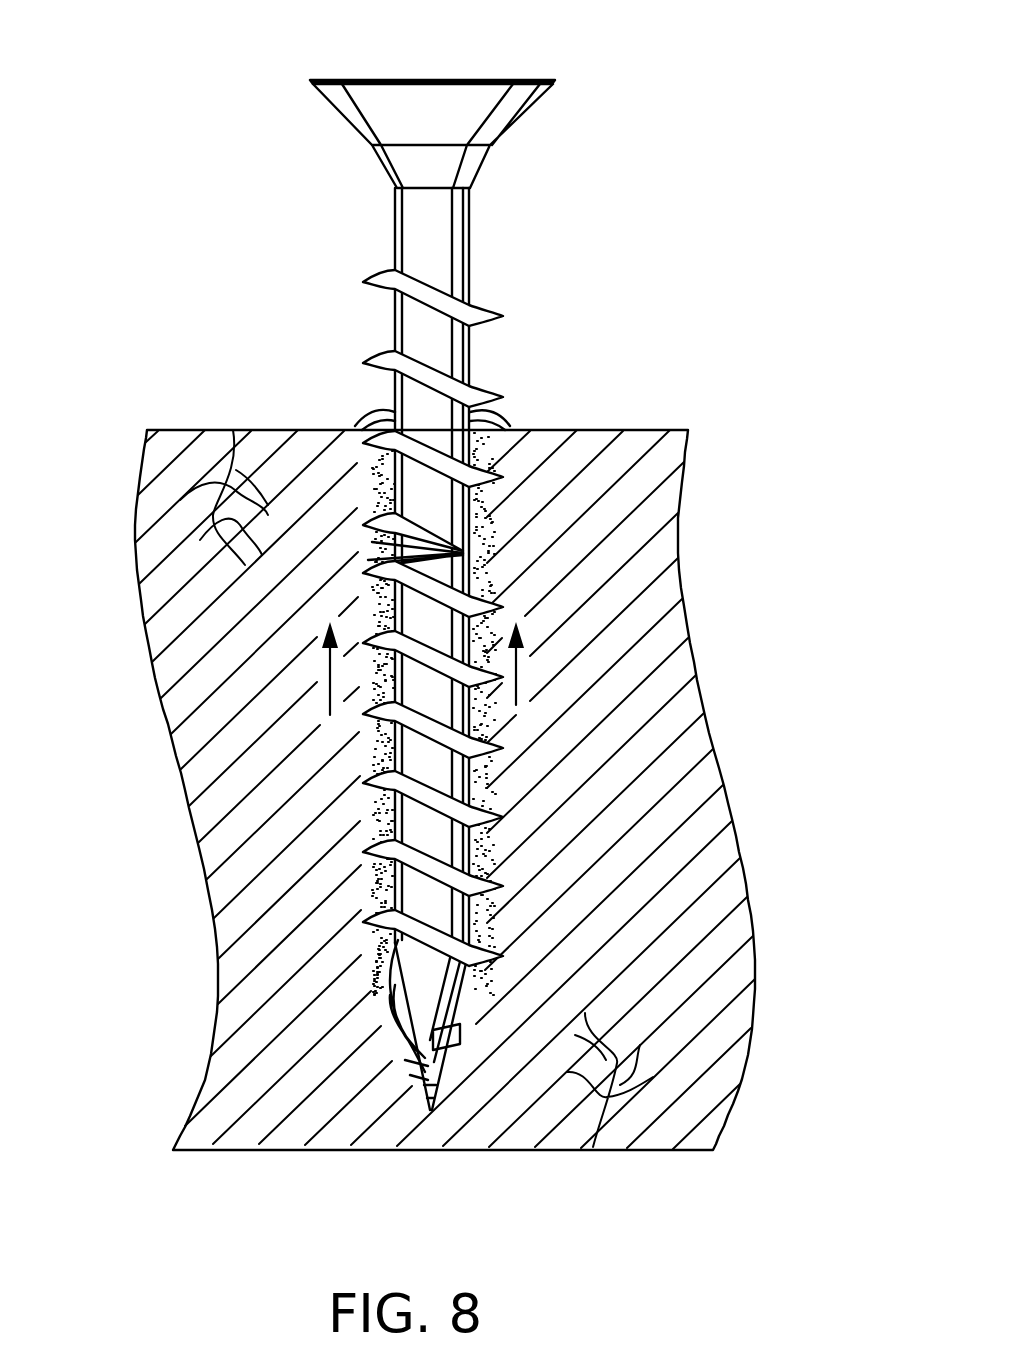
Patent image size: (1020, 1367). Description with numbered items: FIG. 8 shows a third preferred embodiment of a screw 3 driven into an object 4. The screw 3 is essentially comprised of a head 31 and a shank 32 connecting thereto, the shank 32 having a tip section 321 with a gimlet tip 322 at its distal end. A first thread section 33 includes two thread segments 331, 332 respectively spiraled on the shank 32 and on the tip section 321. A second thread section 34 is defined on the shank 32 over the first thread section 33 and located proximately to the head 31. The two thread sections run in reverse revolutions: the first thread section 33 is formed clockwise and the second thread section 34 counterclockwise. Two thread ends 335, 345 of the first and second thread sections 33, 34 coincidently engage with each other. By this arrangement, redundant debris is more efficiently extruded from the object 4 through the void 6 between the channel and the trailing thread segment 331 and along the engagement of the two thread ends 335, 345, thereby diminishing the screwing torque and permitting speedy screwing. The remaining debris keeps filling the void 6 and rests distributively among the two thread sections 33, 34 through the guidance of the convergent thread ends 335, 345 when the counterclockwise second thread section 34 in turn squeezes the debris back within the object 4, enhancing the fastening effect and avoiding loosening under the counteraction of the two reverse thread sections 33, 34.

The screw 3 is at (294, 103).
The head 31 is at (388, 110).
The shank 32 is at (386, 713).
The tip section 321 is at (458, 1012).
The gimlet tip 322 is at (430, 1112).
The first thread section 33 is at (418, 763).
The thread segment 331 is at (378, 785).
The thread segment 332 is at (405, 1003).
The second thread section 34 is at (578, 430).
The thread end 345 is at (462, 552).
The thread end 335 is at (466, 557).
The object 4 is at (190, 430).
The void 6 is at (378, 870).